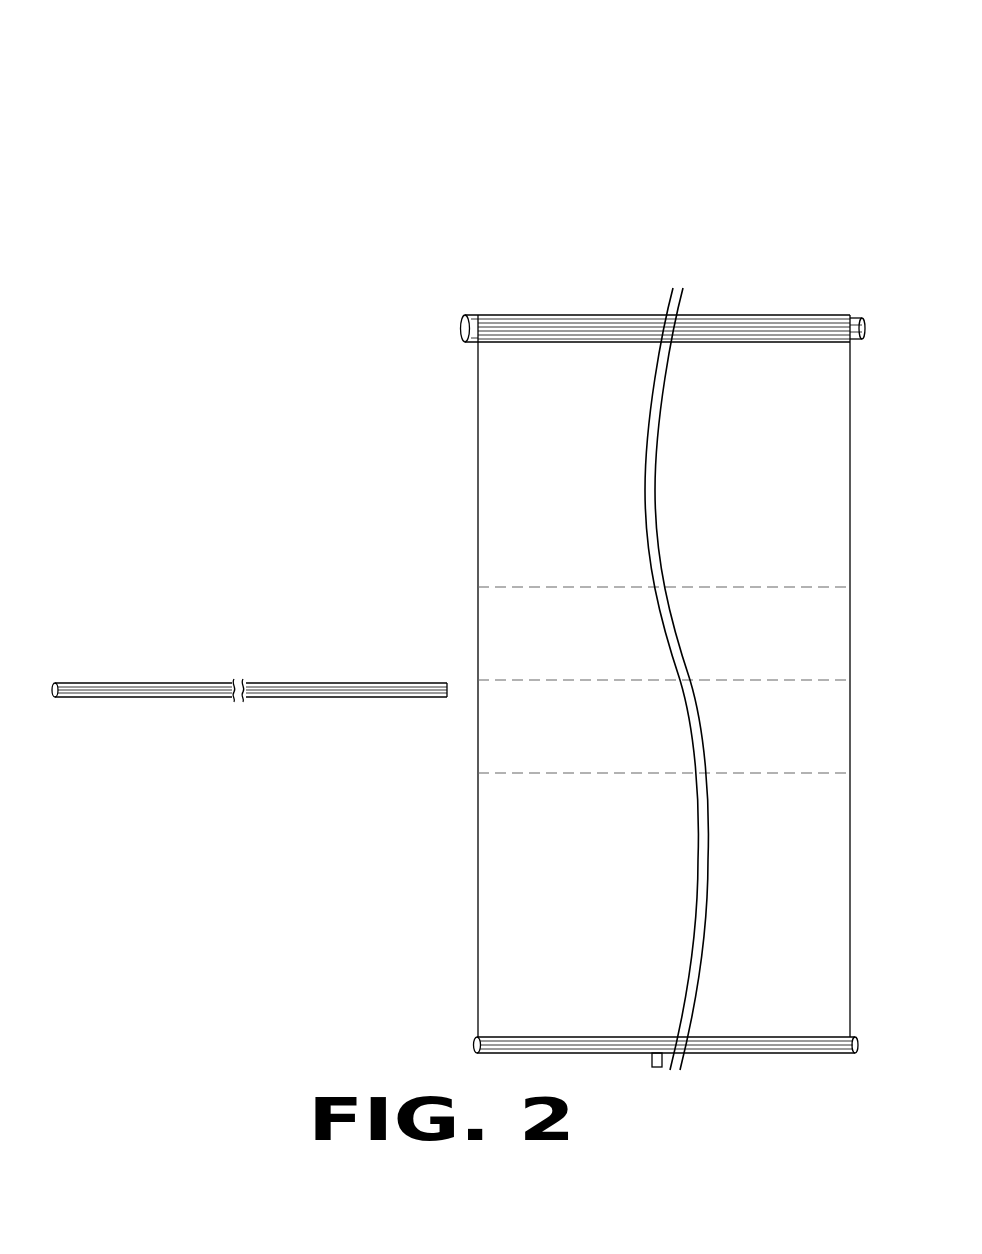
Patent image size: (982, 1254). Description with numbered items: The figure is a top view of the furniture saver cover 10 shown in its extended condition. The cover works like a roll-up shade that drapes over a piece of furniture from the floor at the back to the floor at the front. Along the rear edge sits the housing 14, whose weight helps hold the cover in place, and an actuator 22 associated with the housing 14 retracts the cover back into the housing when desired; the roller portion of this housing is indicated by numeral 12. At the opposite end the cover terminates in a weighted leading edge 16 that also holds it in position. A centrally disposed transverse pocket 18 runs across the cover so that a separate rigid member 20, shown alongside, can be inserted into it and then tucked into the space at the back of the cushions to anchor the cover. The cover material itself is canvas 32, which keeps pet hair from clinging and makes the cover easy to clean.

The furniture saver cover 10 is at (716, 98).
The roller tube 12 is at (585, 358).
The housing 14 is at (468, 318).
The actuator 22 is at (863, 317).
The transverse pocket 18 is at (530, 680).
The canvas 32 is at (507, 820).
The weighted leading edge 16 is at (530, 1038).
The rigid member 20 is at (158, 683).